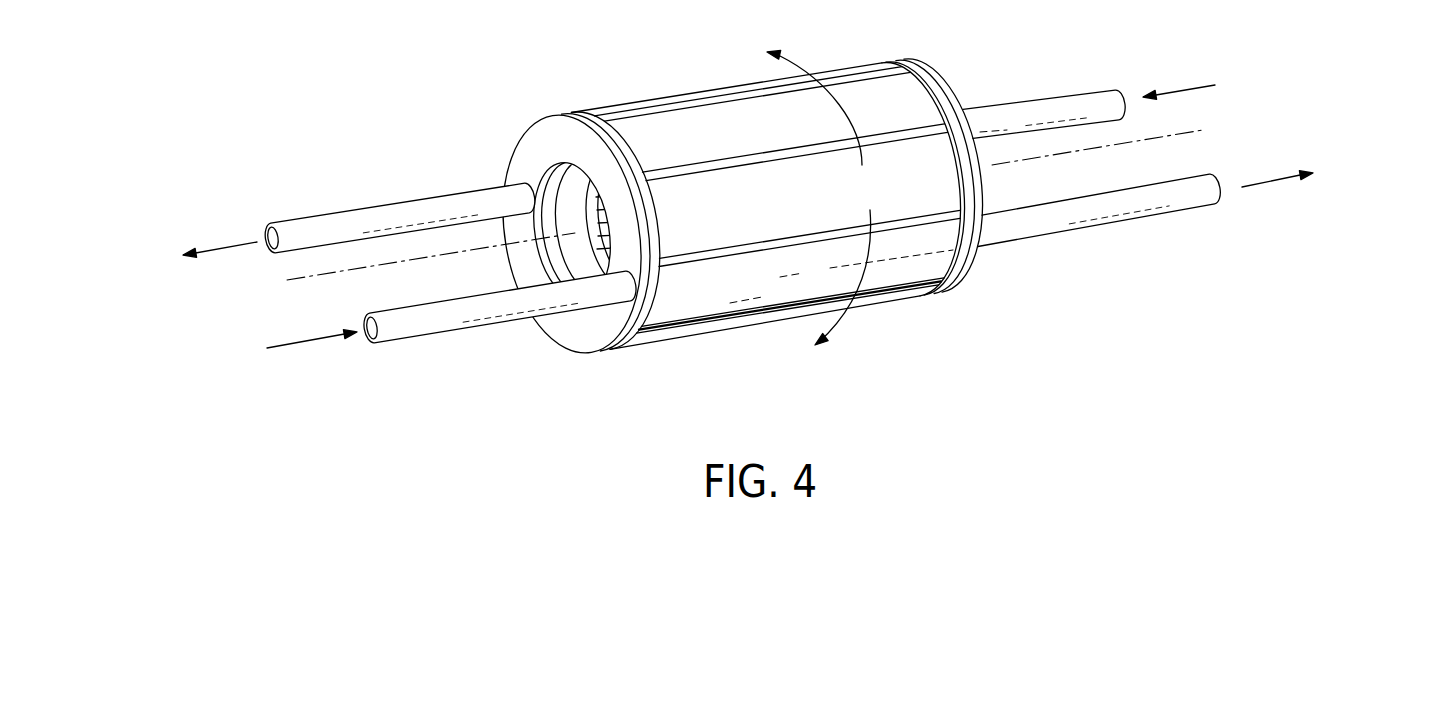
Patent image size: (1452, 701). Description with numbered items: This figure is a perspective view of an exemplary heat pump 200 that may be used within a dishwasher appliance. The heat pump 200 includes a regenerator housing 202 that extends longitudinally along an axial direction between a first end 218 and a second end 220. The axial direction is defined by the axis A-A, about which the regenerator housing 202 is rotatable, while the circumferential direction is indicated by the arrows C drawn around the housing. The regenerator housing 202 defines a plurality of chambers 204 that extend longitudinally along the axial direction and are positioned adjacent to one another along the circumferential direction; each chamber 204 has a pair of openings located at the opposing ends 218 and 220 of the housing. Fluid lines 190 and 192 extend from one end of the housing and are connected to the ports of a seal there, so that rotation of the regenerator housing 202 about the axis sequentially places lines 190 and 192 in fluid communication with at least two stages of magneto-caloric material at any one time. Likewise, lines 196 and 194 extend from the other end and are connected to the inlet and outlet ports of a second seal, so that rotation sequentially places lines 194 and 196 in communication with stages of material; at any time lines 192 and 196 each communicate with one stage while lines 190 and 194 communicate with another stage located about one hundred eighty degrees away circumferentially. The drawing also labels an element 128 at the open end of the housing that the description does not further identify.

The heat pump 200 is at (757, 214).
The regenerator housing 202 is at (882, 100).
The chambers 204 is at (682, 143).
The first end 218 is at (620, 80).
The second end 220 is at (928, 313).
The line 190 is at (1037, 110).
The line 192 is at (380, 217).
The line 194 is at (408, 322).
The line 196 is at (1133, 203).
The inner core bore 128 is at (562, 252).